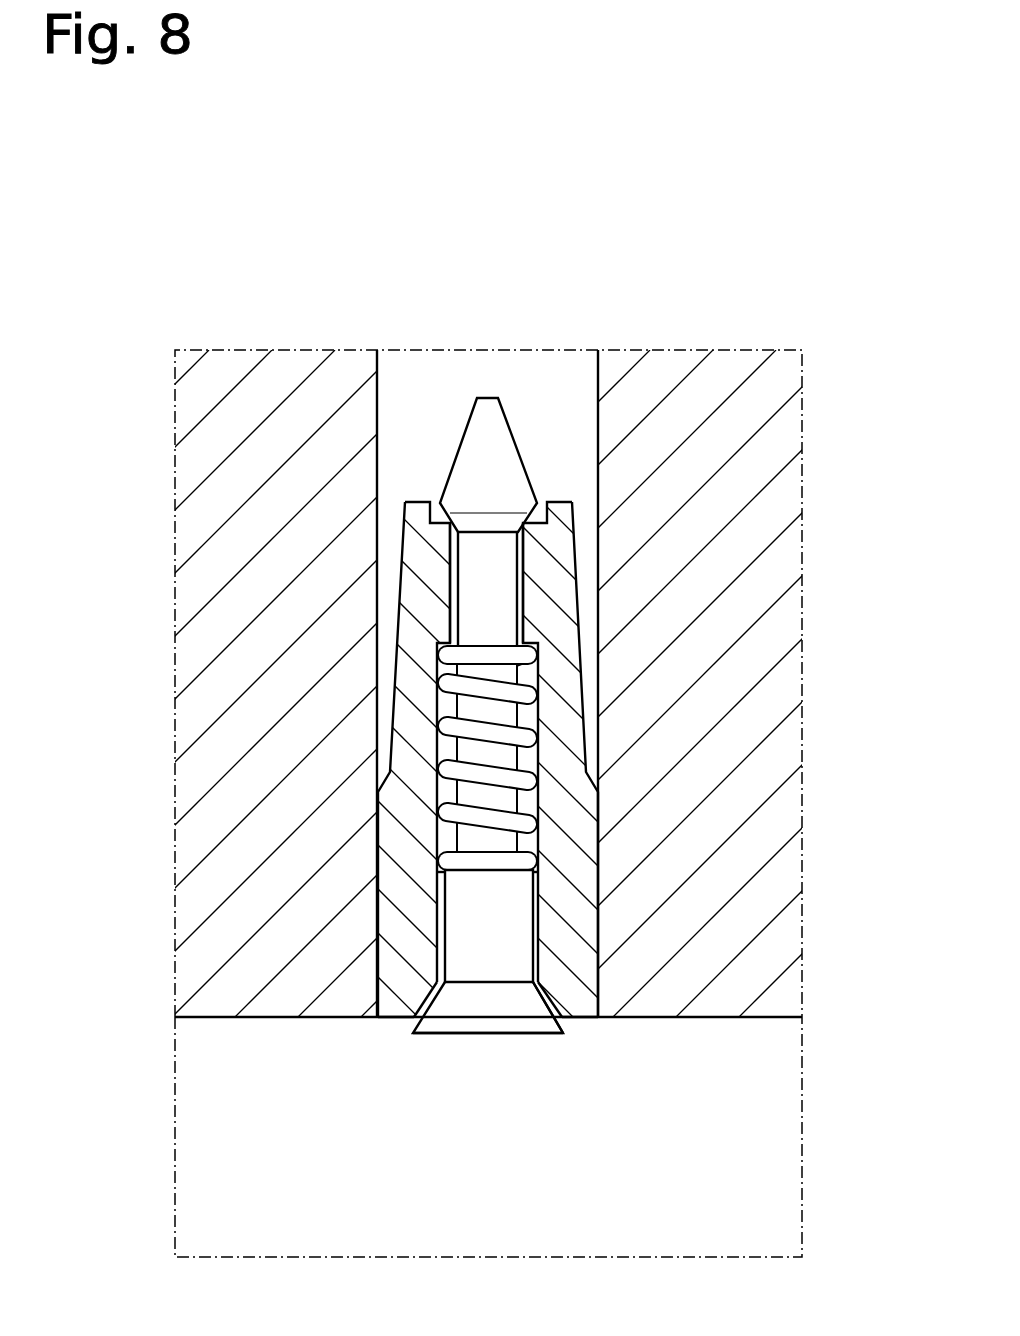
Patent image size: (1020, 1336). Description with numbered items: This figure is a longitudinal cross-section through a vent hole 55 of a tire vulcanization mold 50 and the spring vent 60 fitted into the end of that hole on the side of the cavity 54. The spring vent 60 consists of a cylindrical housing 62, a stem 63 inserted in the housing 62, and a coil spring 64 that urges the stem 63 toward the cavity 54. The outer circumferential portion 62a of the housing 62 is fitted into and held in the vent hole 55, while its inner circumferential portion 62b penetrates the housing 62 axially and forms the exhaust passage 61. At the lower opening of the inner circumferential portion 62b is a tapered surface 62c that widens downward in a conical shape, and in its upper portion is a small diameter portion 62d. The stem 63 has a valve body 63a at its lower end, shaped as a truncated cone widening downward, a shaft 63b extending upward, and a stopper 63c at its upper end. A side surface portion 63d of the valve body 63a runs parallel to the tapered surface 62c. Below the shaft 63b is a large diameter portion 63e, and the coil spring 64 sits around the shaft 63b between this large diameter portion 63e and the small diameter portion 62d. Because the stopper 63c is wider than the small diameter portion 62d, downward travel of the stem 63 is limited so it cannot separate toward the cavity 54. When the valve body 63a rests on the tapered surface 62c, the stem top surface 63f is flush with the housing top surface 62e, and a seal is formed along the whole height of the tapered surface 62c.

The tire vulcanization mold 50 is at (775, 1047).
The cavity 54 is at (507, 1215).
The vent hole 55 is at (435, 403).
The spring vent 60 is at (332, 756).
The exhaust passage 61 is at (541, 804).
The housing 62 is at (510, 747).
The outer circumferential portion 62a is at (377, 843).
The inner circumferential portion 62b is at (440, 872).
The tapered surface 62c is at (553, 997).
The small diameter portion 62d is at (460, 600).
The housing top surface 62e is at (390, 1019).
The stem 63 is at (548, 699).
The valve body 63a is at (506, 1022).
The shaft 63b is at (510, 607).
The stopper 63c is at (510, 490).
The side surface portion 63d is at (548, 998).
The large diameter portion 63e is at (506, 926).
The stem top surface 63f is at (525, 1035).
The coil spring 64 is at (545, 698).